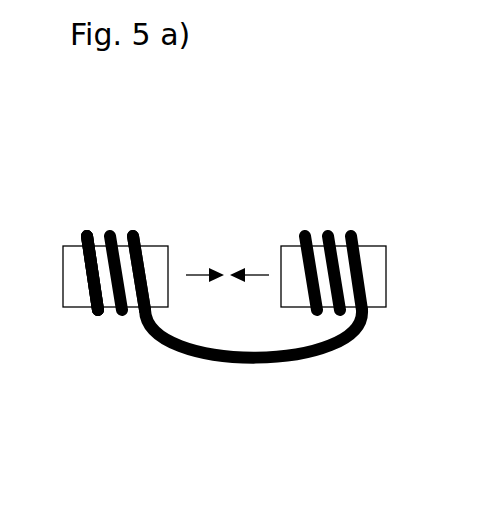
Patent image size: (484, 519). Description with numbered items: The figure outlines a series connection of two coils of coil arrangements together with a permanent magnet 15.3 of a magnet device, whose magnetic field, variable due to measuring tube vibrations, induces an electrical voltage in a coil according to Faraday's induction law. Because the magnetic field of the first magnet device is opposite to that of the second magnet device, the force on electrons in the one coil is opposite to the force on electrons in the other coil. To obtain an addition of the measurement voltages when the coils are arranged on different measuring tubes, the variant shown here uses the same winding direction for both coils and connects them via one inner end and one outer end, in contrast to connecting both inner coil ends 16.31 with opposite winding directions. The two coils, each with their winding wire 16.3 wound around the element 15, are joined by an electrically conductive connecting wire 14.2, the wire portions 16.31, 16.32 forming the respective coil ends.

The stator tooth 15 is at (375, 246).
The permanent magnet 15.3 is at (157, 232).
The winding wire 16.3 is at (99, 329).
The inner coil end 16.31 is at (146, 329).
The second wire end portion 16.32 is at (78, 220).
The connecting wire 14.2 is at (261, 373).